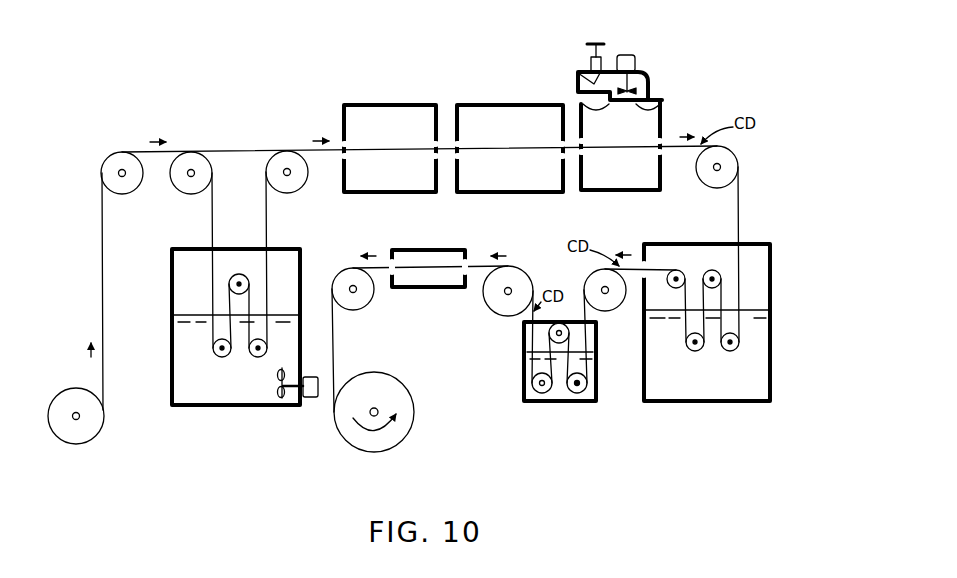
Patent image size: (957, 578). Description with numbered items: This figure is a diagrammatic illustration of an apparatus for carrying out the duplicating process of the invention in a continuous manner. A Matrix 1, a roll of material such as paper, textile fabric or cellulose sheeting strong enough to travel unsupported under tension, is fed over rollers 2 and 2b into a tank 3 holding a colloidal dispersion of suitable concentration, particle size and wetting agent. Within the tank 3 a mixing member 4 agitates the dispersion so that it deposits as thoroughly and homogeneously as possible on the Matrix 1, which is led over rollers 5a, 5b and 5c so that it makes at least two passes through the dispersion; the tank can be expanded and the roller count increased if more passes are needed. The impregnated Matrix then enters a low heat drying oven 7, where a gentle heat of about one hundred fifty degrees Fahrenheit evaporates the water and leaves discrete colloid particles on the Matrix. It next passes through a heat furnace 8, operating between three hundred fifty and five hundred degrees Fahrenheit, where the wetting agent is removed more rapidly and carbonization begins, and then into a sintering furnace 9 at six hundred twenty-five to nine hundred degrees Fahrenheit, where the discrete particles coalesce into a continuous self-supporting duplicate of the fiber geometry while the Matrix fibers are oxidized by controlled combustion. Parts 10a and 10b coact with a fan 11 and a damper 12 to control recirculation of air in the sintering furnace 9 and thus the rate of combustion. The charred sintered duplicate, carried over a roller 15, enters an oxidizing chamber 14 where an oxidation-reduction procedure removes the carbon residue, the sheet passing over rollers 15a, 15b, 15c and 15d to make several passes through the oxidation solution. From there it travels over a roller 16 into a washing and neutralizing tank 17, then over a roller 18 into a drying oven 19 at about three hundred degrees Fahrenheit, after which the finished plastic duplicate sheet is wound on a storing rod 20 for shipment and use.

The Matrix 1 is at (212, 223).
The roller 2 is at (122, 187).
The roller 2b is at (183, 187).
The tank 3 is at (170, 345).
The mixing member 4 is at (282, 369).
The roller 5a is at (215, 352).
The roller 5b is at (242, 275).
The roller 5c is at (252, 354).
The low heat drying oven 7 is at (390, 172).
The heat furnace 8 is at (511, 172).
The sintering furnace 9 is at (621, 135).
The part 10a is at (578, 105).
The part 10b is at (663, 114).
The fan 11 is at (638, 86).
The damper 12 is at (596, 83).
The oxidizing chamber 14 is at (773, 357).
The roller 15 is at (713, 182).
The roller 15a is at (732, 349).
The roller 15b is at (713, 271).
The roller 15c is at (689, 345).
The roller 15d is at (678, 271).
The roller 16 is at (610, 308).
The washing and neutralizing tank 17 is at (562, 378).
The roller 18 is at (500, 307).
The drying oven 19 is at (357, 303).
The storing rod 20 is at (375, 408).